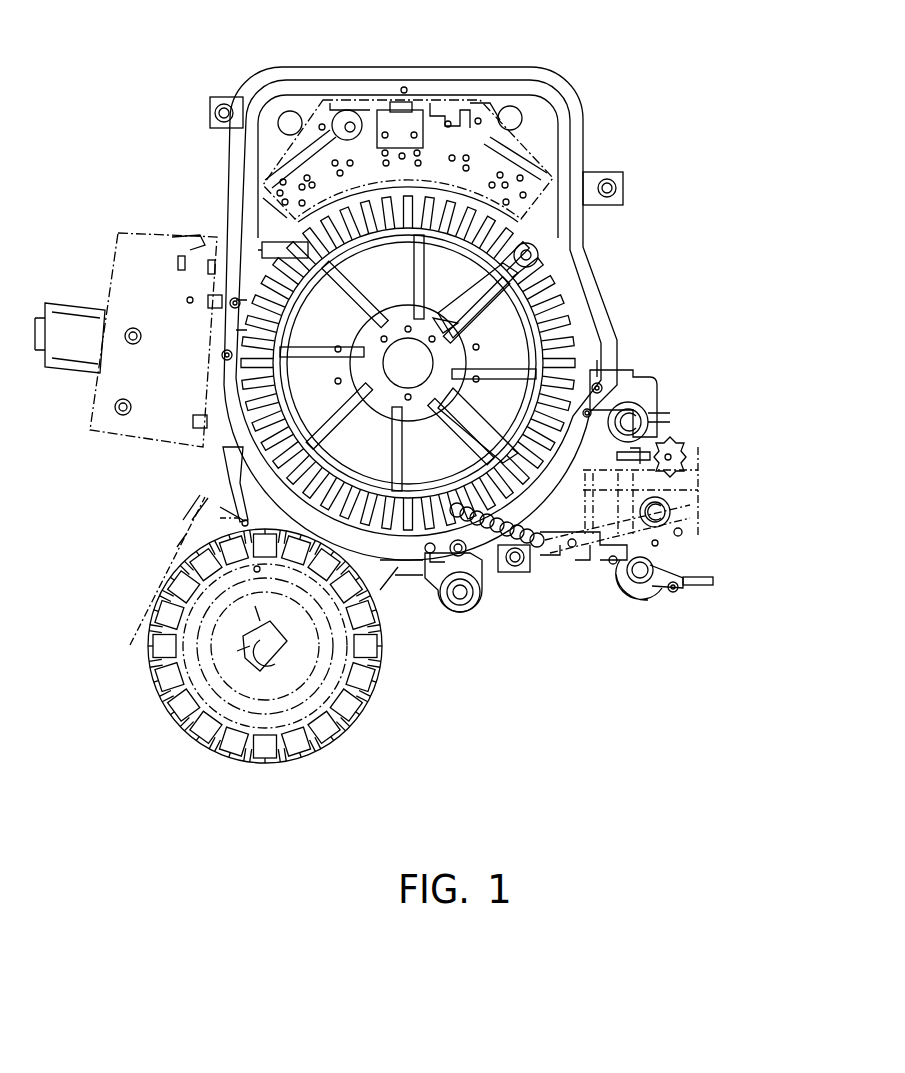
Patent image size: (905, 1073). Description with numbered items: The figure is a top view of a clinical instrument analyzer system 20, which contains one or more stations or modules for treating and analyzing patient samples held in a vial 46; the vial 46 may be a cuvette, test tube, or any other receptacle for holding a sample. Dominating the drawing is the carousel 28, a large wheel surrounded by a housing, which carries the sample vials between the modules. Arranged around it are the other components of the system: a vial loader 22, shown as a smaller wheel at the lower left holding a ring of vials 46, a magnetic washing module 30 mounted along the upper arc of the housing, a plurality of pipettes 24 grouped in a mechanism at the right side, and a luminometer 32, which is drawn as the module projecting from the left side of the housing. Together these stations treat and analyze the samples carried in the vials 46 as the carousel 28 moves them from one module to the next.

The clinical instrument analyzer system 20 is at (129, 39).
The vial loader 22 is at (310, 700).
The pipettes 24 is at (641, 590).
The carousel 28 is at (510, 358).
The magnetic washing module 30 is at (480, 160).
The luminometer 32 is at (135, 258).
The vial 46 is at (180, 713).